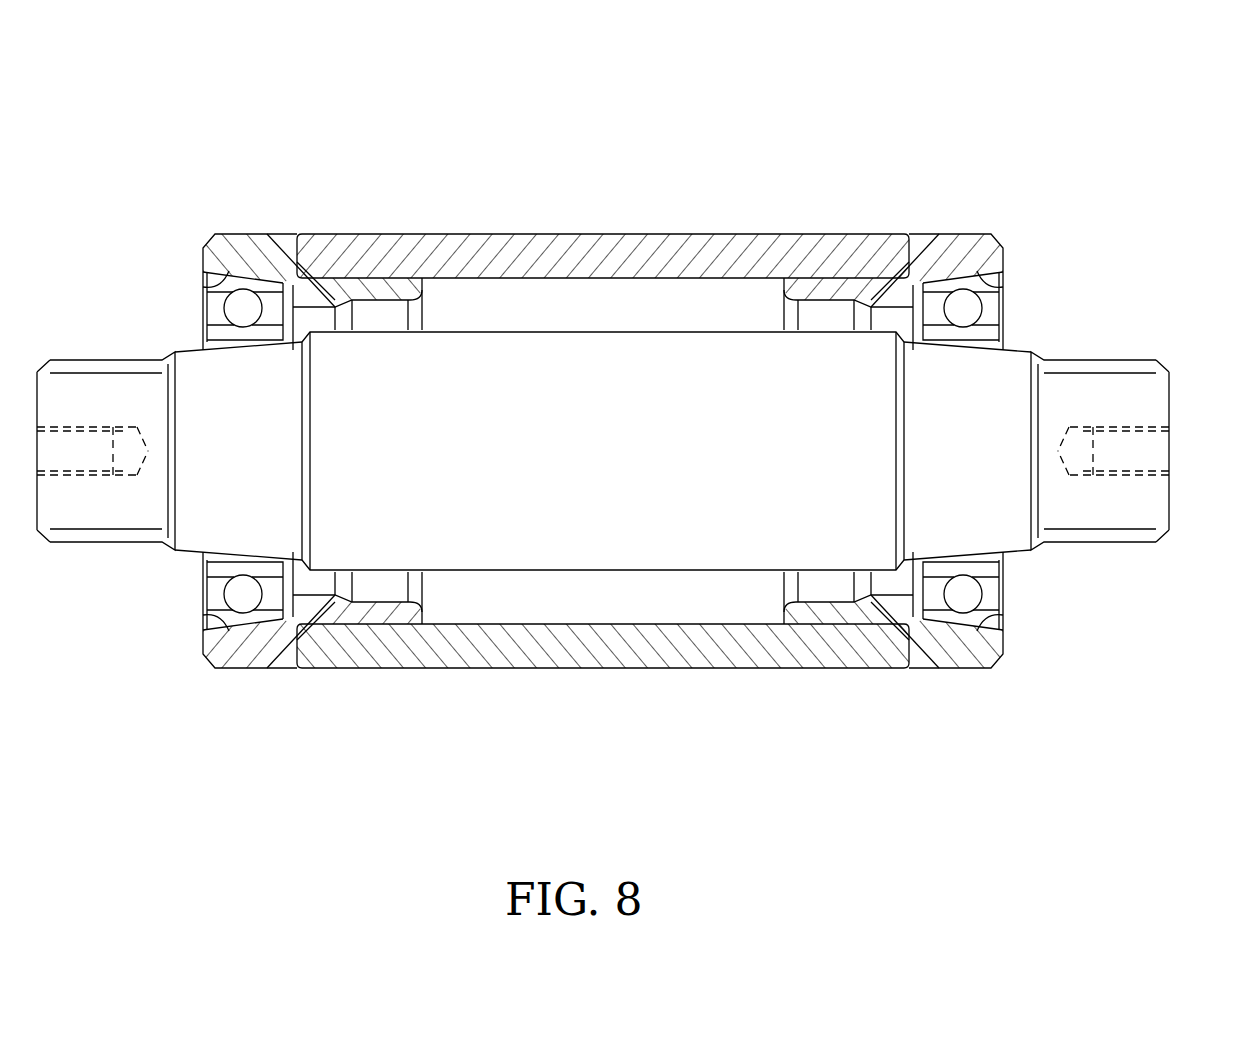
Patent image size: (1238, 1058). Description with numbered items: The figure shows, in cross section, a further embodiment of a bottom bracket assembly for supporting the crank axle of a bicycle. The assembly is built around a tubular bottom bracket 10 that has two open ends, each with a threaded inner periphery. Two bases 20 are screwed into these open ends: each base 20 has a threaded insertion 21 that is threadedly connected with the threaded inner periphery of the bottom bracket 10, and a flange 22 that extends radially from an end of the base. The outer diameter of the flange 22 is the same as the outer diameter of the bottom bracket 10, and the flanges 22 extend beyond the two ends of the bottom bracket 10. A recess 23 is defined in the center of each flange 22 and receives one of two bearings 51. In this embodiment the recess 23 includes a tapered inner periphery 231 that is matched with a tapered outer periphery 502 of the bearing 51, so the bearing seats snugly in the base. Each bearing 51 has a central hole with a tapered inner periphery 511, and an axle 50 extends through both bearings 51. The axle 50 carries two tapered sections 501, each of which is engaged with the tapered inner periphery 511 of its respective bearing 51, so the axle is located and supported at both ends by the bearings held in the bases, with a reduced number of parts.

The bottom bracket 10 is at (530, 234).
The base 20 is at (603, 442).
The threaded insertion 21 is at (372, 280).
The flange 22 is at (273, 233).
The recess 23 is at (247, 280).
The tapered inner periphery 231 is at (936, 272).
The axle 50 is at (616, 386).
The tapered section 501 is at (230, 552).
The tapered outer periphery 502 is at (1003, 287).
The bearing 51 is at (241, 290).
The tapered inner periphery 511 is at (203, 345).